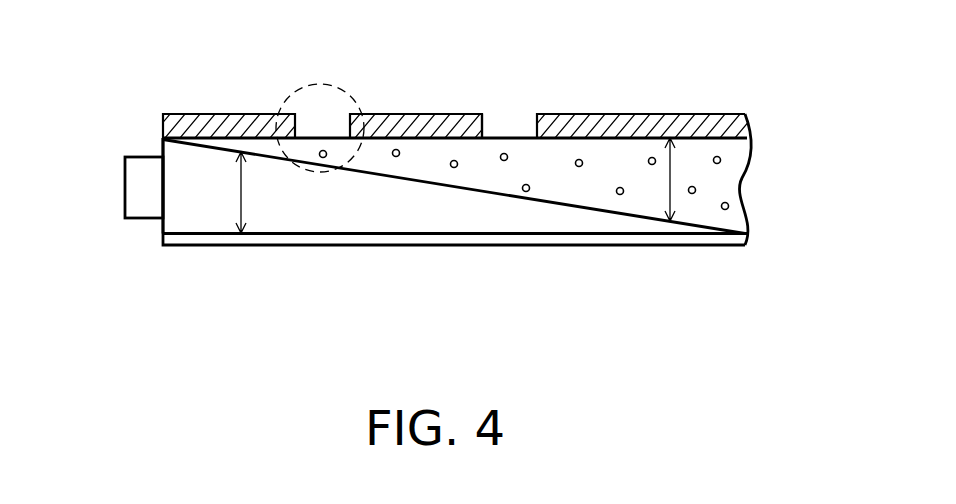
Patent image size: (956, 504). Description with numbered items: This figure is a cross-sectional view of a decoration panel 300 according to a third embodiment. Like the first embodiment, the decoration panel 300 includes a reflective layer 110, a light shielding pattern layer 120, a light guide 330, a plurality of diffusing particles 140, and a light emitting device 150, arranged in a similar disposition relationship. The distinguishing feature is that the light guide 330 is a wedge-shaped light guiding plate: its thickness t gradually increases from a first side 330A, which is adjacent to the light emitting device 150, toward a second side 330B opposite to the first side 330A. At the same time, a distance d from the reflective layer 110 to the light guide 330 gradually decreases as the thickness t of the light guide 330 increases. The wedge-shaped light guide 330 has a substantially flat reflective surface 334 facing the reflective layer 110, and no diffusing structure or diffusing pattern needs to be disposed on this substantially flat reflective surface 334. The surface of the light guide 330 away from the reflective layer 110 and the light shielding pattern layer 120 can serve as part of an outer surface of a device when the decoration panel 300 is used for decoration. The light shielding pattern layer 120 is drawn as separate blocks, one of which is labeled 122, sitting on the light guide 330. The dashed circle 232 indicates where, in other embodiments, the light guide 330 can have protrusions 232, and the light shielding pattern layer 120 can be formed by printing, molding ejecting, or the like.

The decoration panel 300 is at (800, 320).
The reflective layer 110 is at (338, 241).
The substantially flat reflective surface 334 is at (607, 245).
The light guide 330 is at (619, 162).
The first side 330A is at (153, 151).
The second side 330B is at (752, 183).
The diffusing particles 140 is at (455, 168).
The light shielding pattern layer 120 is at (230, 113).
The pattern block 122 is at (492, 132).
The protrusions 232 is at (350, 90).
The light emitting device 150 is at (145, 190).
The distance d is at (240, 195).
The thickness t is at (671, 165).